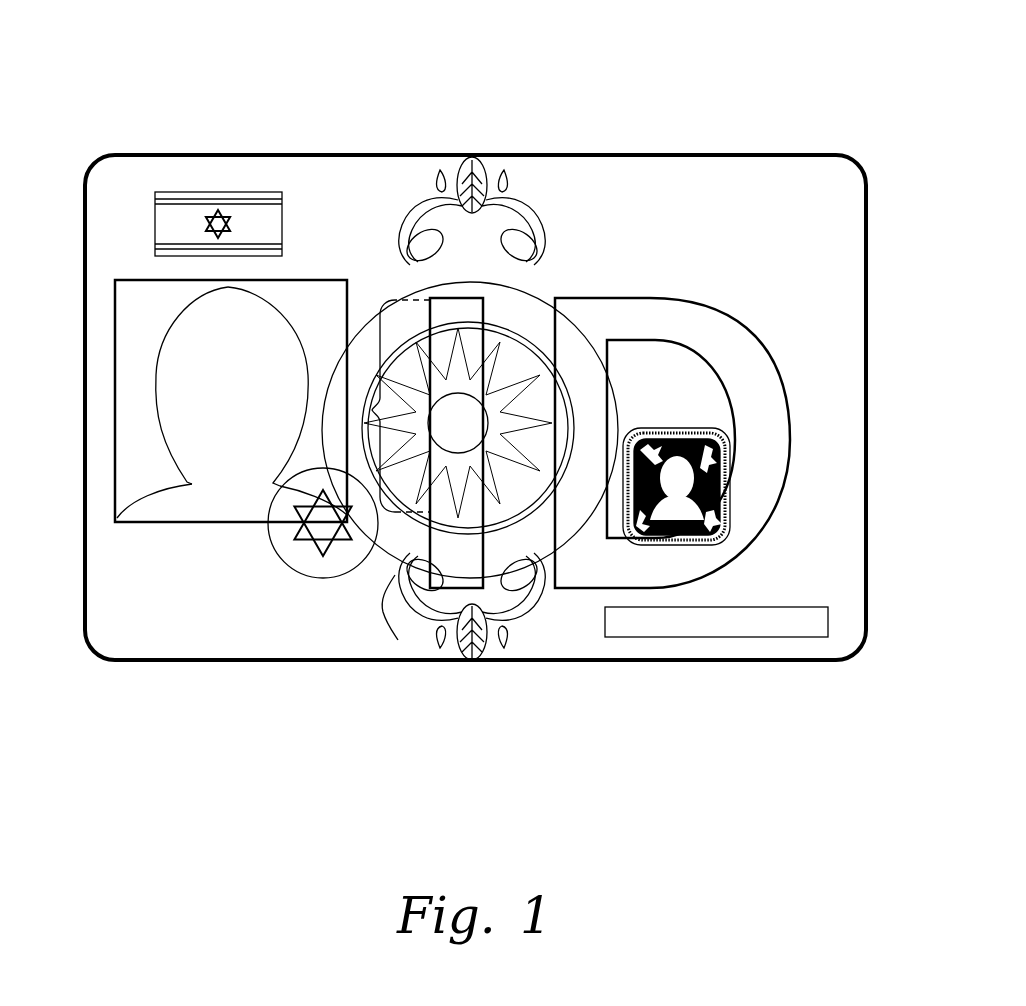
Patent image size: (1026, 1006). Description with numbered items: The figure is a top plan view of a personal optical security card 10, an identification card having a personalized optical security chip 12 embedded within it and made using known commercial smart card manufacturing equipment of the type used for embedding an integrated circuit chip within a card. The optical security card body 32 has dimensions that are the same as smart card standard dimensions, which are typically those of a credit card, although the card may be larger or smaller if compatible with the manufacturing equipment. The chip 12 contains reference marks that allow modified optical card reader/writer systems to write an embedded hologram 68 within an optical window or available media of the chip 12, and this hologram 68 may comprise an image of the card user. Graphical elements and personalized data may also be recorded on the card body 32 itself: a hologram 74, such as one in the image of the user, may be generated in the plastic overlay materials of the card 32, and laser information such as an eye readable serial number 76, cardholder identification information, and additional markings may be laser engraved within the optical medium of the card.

The personal optical security card 10 is at (722, 48).
The personalized optical security chip 12 is at (752, 580).
The optical security card body 32 is at (868, 410).
The embedded hologram 68 is at (668, 528).
The hologram 74 is at (175, 408).
The eye readable serial number 76 is at (730, 615).